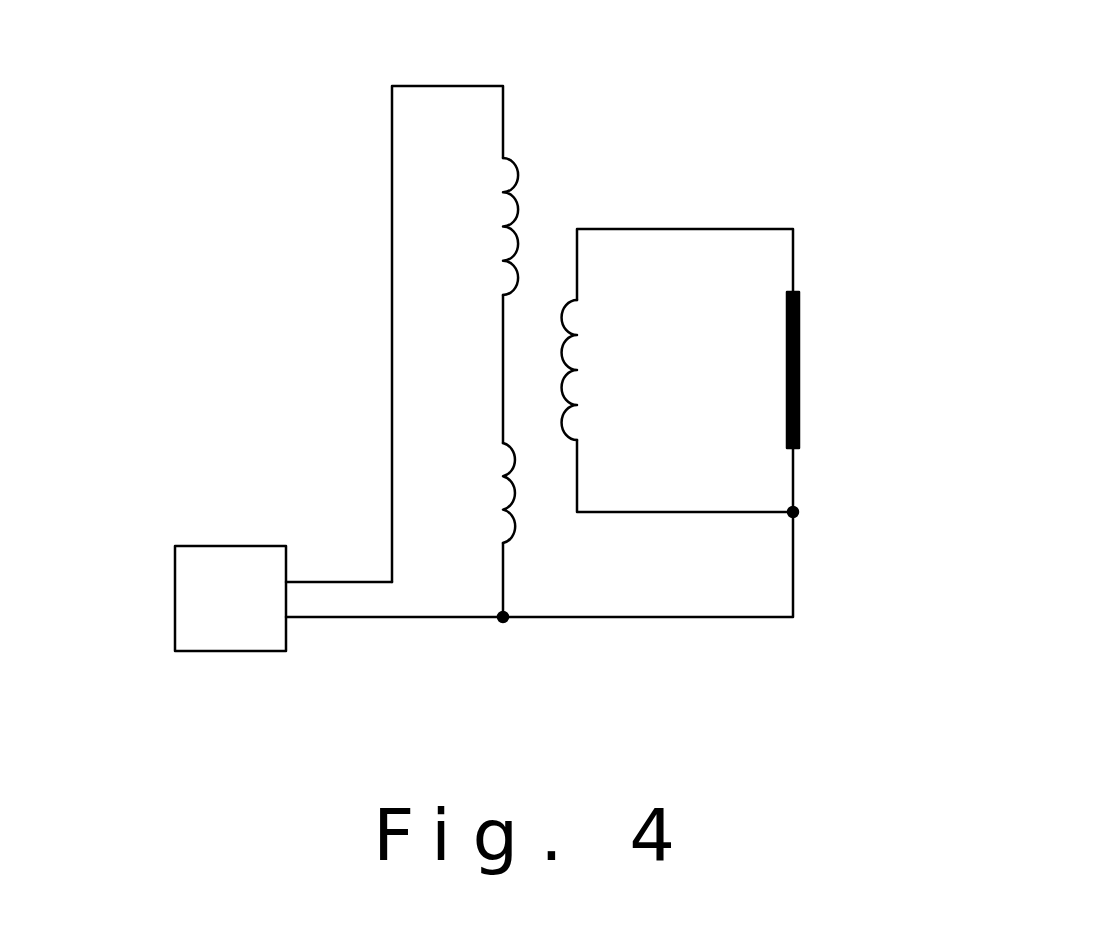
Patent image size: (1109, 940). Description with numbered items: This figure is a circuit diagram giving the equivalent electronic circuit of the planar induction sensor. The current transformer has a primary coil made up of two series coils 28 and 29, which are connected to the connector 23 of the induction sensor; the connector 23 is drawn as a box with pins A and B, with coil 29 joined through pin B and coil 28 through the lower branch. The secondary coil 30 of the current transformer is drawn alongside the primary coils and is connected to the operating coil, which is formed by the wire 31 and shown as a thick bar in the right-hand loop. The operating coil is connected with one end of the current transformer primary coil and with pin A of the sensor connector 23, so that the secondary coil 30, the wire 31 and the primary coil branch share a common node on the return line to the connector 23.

The connector 23 is at (212, 555).
The series coil 28 is at (519, 492).
The series coil 29 is at (520, 173).
The secondary coil 30 is at (570, 298).
The wire 31 is at (800, 357).